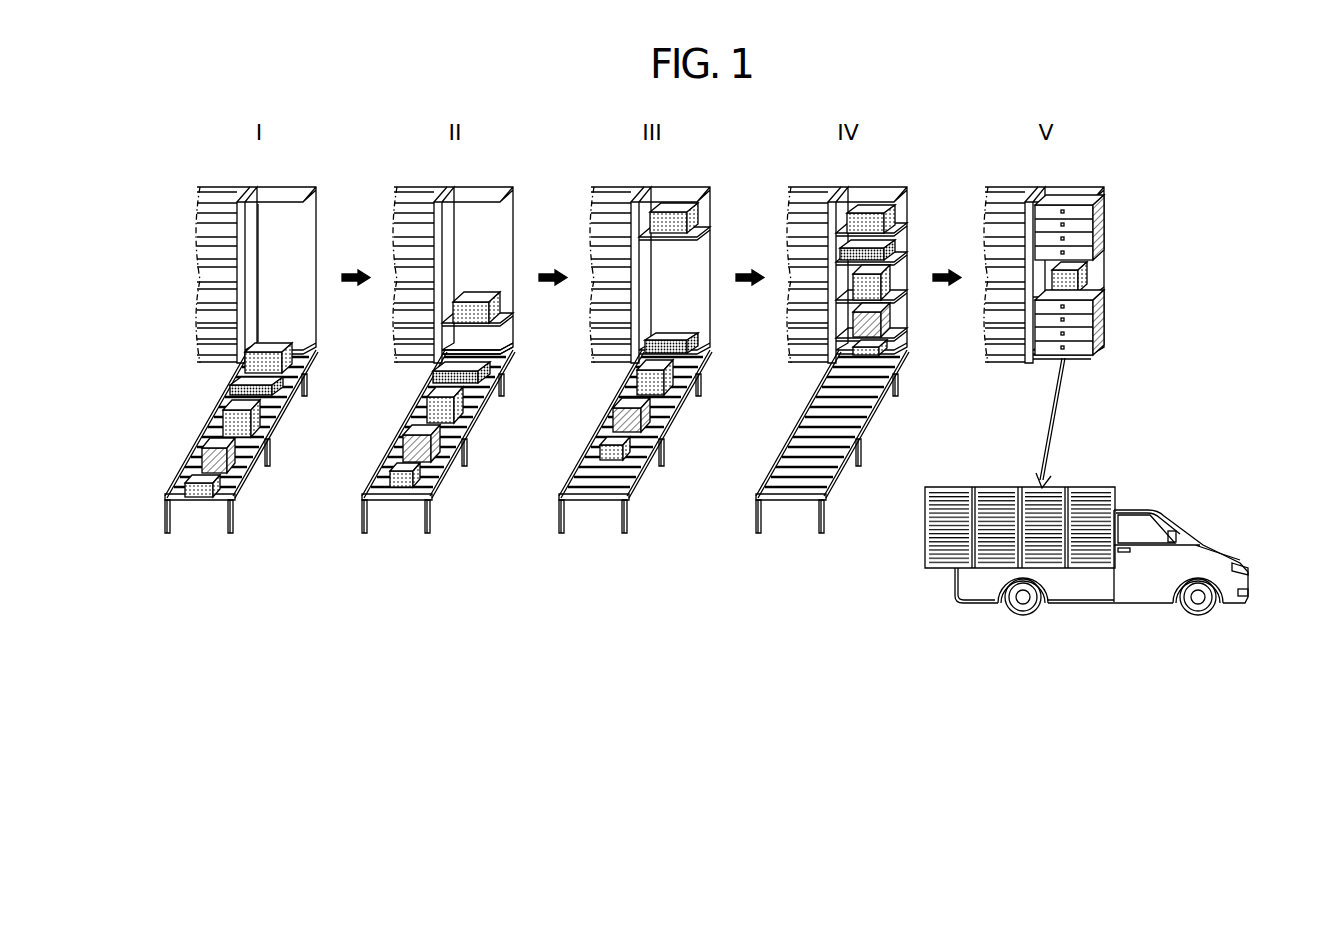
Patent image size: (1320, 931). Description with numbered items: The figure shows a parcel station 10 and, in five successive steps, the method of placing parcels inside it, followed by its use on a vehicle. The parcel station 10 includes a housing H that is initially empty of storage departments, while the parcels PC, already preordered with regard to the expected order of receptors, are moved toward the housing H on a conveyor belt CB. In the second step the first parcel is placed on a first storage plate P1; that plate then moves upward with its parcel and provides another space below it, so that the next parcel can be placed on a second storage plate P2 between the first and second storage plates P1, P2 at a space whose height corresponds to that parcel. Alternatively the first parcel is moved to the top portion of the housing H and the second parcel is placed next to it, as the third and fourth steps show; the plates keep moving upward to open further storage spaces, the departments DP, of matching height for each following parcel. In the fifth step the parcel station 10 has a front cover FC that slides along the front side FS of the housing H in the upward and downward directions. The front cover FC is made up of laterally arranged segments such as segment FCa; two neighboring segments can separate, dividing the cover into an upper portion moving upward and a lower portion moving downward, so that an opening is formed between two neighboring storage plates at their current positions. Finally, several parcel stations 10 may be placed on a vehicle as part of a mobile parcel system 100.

The parcel station 10 is at (697, 377).
The housing H is at (285, 255).
The parcels PC is at (208, 443).
The conveyor belt CB is at (247, 472).
The first storage plate P1 is at (508, 317).
The second storage plate P2 is at (500, 350).
The storage departments DP is at (898, 277).
The front cover FC is at (1110, 227).
The front side FS is at (1082, 225).
The front cover segment FCa is at (1082, 310).
The mobile parcel system 100 is at (1010, 552).